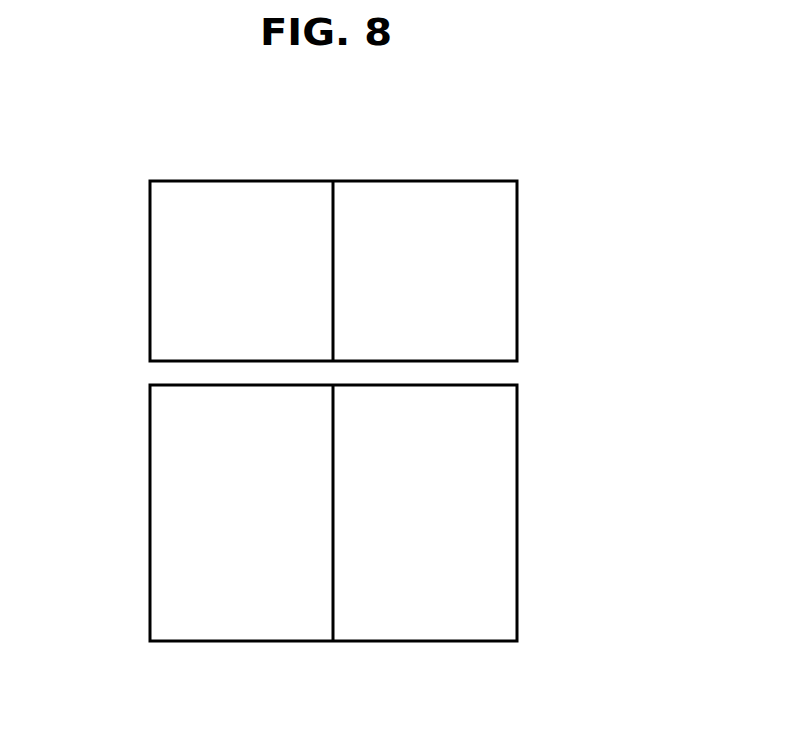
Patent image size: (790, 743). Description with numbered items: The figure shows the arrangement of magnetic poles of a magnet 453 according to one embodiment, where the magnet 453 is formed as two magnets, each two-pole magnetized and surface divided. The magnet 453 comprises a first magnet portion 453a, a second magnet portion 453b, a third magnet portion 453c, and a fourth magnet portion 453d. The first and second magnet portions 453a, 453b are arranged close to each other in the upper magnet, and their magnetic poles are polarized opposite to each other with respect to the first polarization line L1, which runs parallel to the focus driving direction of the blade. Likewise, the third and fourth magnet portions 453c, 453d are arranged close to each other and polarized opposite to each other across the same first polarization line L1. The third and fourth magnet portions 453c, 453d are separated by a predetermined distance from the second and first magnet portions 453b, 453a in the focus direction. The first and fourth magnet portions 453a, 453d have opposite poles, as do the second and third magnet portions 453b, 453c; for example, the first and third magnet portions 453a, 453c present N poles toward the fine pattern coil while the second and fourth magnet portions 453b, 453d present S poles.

The magnet 453 is at (556, 199).
The first magnet portion 453a is at (508, 273).
The second magnet portion 453b is at (156, 287).
The third magnet portion 453c is at (156, 529).
The fourth magnet portion 453d is at (508, 538).
The first polarization line L1 is at (333, 676).